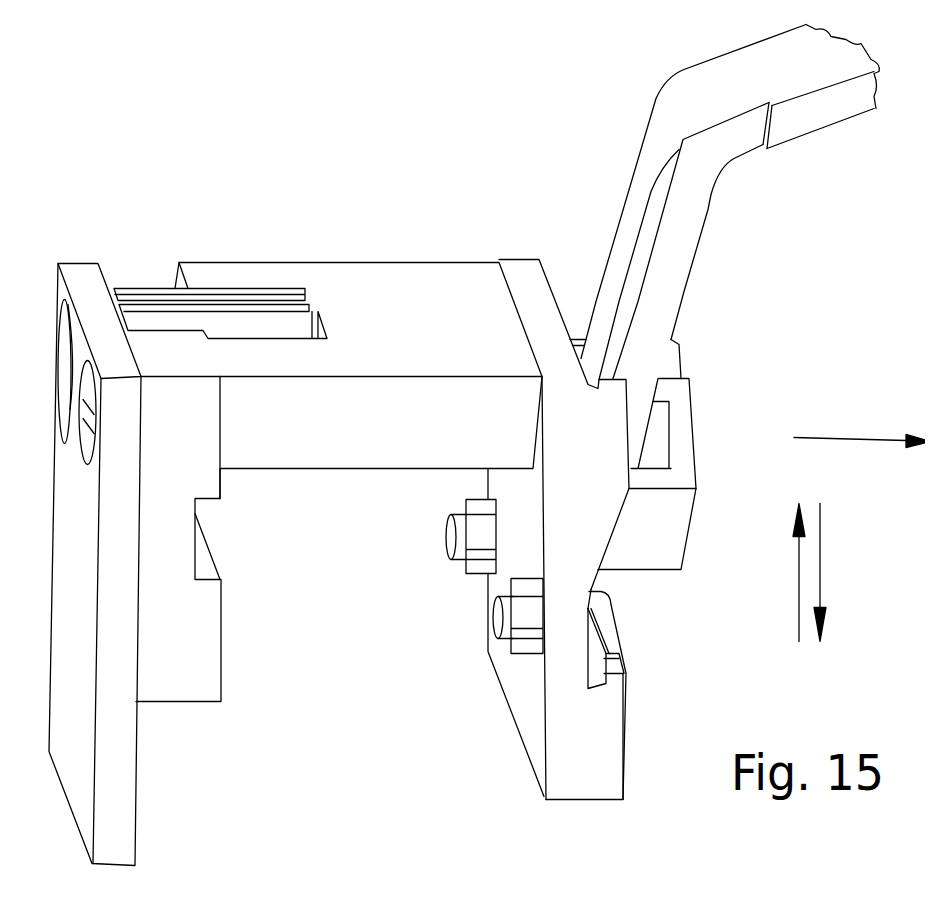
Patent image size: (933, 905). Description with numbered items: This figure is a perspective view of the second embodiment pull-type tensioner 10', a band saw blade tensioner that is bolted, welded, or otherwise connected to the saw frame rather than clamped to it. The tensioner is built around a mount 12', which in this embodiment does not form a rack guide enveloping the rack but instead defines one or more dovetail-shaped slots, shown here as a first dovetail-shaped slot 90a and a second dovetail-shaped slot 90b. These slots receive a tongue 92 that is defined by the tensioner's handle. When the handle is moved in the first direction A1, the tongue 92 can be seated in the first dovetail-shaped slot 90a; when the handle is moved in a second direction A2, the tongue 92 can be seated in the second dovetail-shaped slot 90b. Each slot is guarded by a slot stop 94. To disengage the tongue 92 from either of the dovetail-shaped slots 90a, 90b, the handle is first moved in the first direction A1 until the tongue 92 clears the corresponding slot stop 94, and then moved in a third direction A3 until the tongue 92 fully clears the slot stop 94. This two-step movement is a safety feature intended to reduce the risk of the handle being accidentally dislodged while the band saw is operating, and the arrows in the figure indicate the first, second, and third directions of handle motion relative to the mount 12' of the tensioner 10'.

The second embodiment pull-type tensioner 10' is at (296, 565).
The mount 12' is at (328, 459).
The first dovetail-shaped slot 90a is at (597, 389).
The second dovetail-shaped slot 90b is at (598, 687).
The tongue 92 is at (647, 233).
The slot stop 94 is at (625, 425).
The first direction A1 is at (797, 570).
The second direction A2 is at (820, 570).
The third direction A3 is at (832, 435).